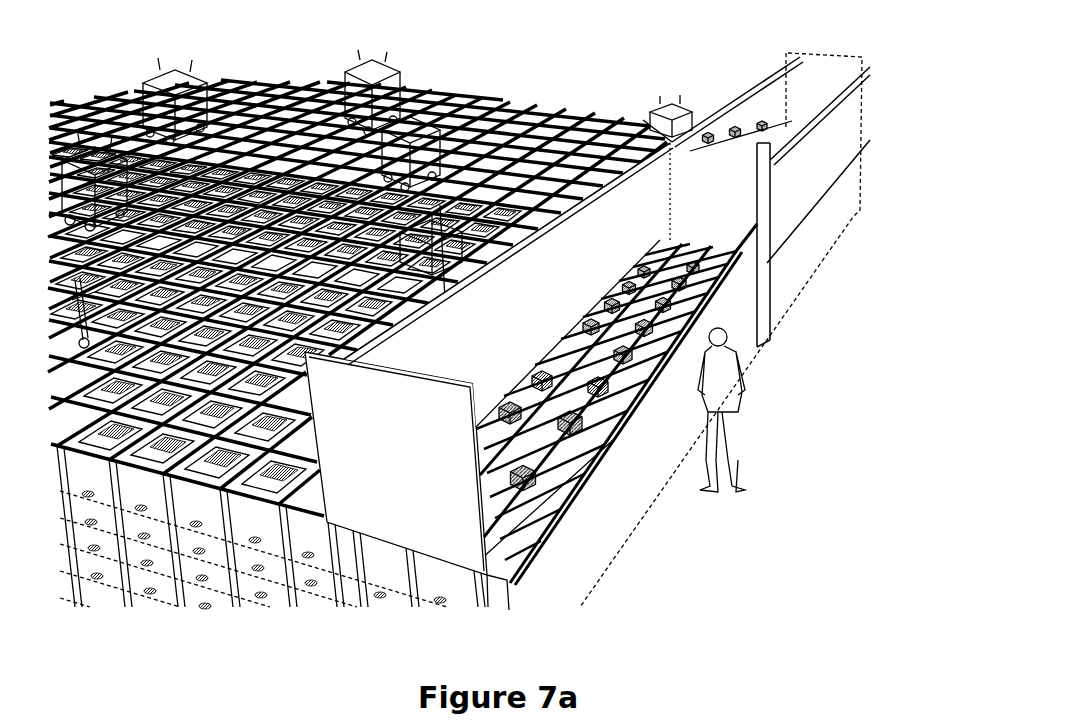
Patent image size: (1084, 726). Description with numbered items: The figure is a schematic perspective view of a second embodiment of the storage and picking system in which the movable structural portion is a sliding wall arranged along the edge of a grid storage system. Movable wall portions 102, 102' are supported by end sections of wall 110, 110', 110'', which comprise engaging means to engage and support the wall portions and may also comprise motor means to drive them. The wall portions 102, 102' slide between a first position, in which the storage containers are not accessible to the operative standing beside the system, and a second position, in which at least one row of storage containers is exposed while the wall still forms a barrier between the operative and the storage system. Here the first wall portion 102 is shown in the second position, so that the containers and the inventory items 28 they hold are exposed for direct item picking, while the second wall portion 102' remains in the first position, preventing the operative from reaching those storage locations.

The end section of wall 110 is at (317, 506).
The end section of wall 110' is at (623, 285).
The end section of wall 110'' is at (710, 78).
The first wall portion 102 is at (654, 405).
The second wall portion 102' is at (763, 330).
The inventory items 28 is at (540, 467).